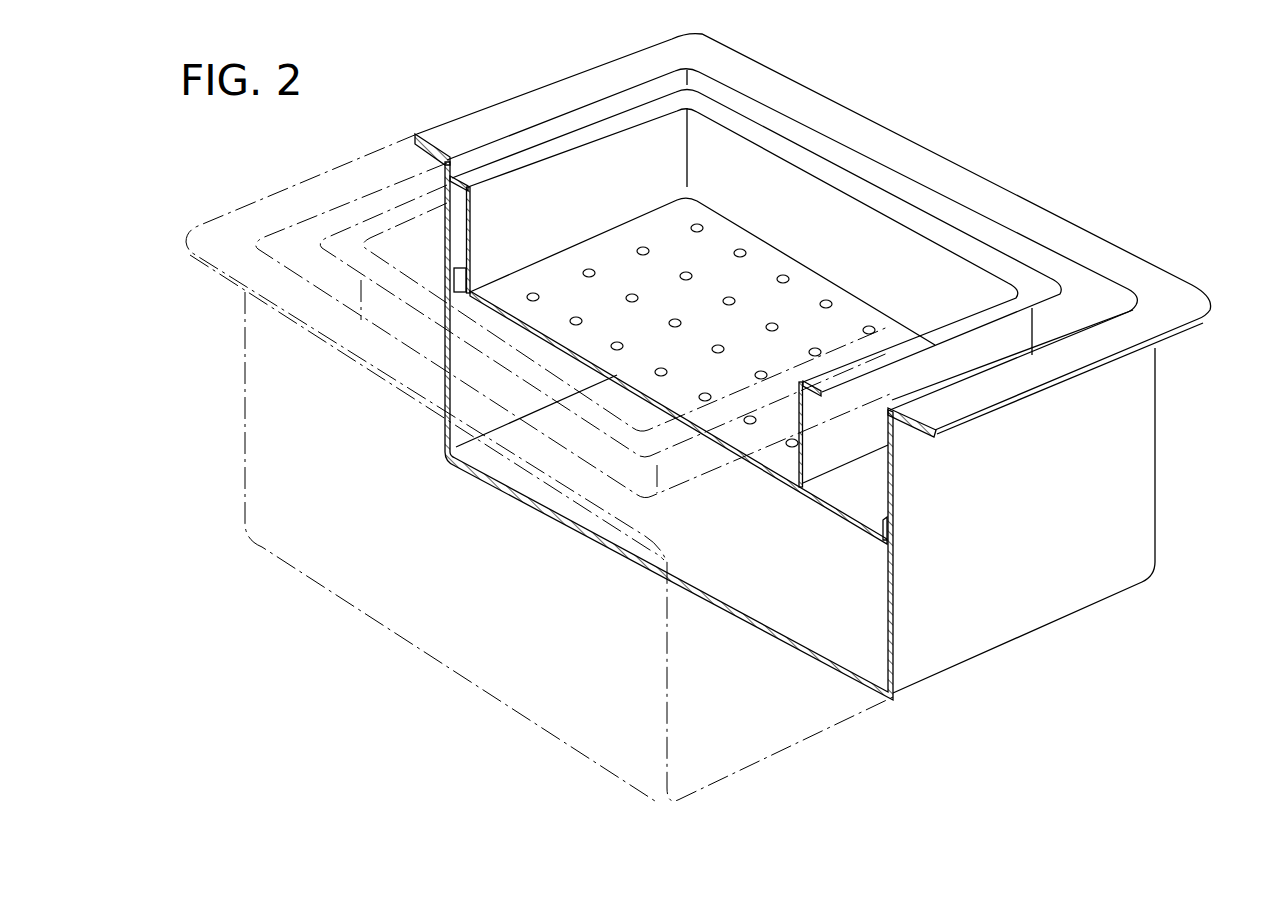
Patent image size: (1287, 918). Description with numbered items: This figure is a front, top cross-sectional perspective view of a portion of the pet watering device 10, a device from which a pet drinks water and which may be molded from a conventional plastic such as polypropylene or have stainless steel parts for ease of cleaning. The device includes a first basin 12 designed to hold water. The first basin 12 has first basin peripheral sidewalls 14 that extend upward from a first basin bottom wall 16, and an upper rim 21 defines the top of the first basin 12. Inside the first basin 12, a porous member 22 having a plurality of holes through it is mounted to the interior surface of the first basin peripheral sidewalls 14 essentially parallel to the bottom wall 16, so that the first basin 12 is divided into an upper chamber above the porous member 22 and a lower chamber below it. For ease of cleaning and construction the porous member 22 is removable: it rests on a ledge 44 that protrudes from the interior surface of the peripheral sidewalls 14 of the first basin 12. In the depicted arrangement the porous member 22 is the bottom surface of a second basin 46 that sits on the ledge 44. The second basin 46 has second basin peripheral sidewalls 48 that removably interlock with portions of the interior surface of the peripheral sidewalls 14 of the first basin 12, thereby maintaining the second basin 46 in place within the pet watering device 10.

The pet watering device 10 is at (794, 370).
The first basin 12 is at (1080, 466).
The first basin peripheral sidewalls 14 is at (884, 470).
The first basin bottom wall 16 is at (790, 655).
The upper rim 21 is at (543, 105).
The porous member 22 is at (795, 297).
The ledge 44 is at (460, 280).
The second basin 46 is at (963, 247).
The second basin peripheral sidewalls 48 is at (518, 205).